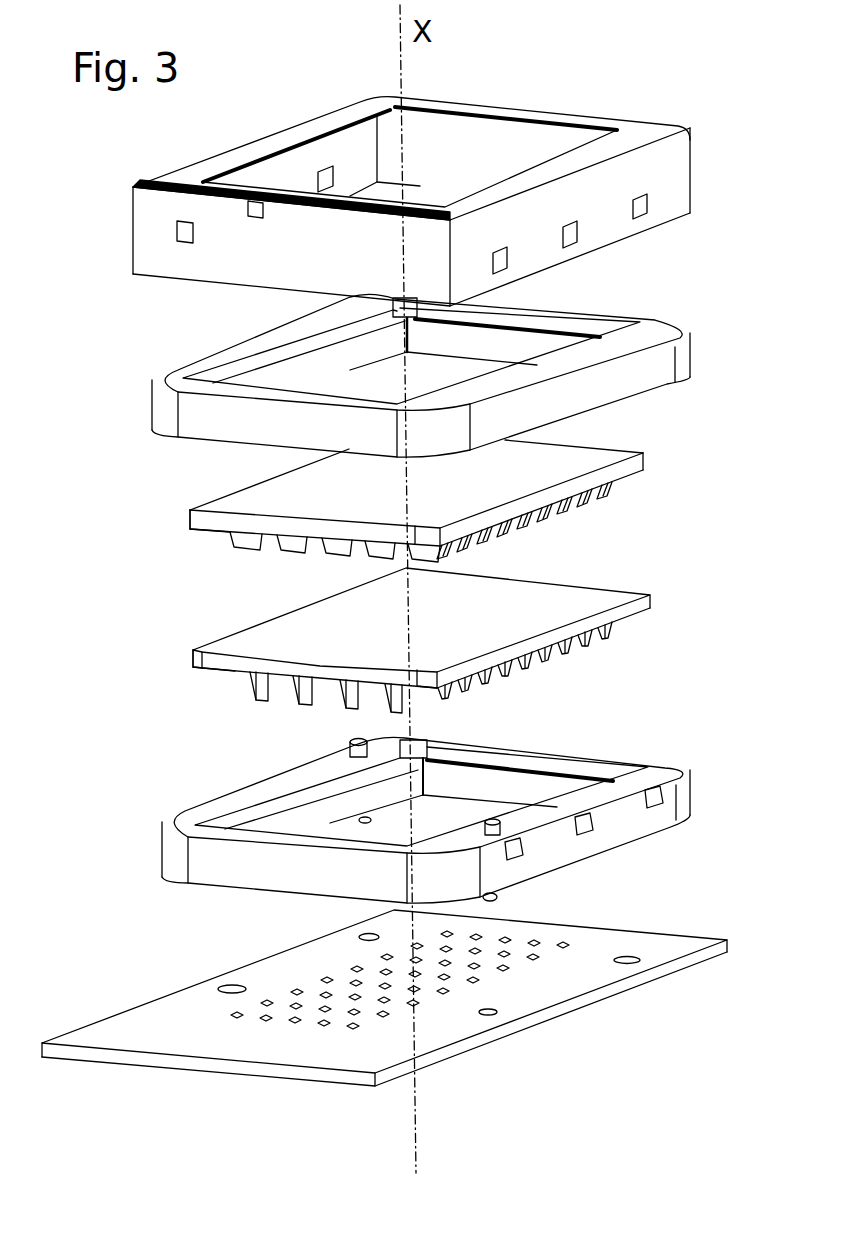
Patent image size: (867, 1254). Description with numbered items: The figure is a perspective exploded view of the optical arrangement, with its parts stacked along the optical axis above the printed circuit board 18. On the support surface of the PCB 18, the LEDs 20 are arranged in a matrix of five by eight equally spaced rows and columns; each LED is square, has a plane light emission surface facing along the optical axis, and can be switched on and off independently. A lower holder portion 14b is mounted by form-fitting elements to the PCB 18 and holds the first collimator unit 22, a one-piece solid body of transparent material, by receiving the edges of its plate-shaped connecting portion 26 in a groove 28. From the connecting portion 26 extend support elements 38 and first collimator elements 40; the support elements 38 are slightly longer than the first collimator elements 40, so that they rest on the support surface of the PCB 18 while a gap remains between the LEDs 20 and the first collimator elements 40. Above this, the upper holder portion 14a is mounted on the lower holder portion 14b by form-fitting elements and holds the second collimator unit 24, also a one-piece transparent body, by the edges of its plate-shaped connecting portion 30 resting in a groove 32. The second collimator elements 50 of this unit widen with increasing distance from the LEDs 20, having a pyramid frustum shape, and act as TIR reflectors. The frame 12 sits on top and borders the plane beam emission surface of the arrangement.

The frame 12 is at (672, 160).
The upper holder portion 14a is at (466, 345).
The lower holder portion 14b is at (466, 796).
The printed circuit board 18 is at (402, 978).
The LEDs 20 is at (553, 950).
The first collimator unit 22 is at (431, 655).
The second collimator unit 24 is at (416, 490).
The connecting portion 26 is at (200, 648).
The groove 28 is at (580, 762).
The connecting portion 30 is at (218, 505).
The groove 32 is at (638, 322).
The support elements 38 is at (300, 706).
The first collimator elements 40 is at (570, 673).
The second collimator elements 50 is at (560, 527).